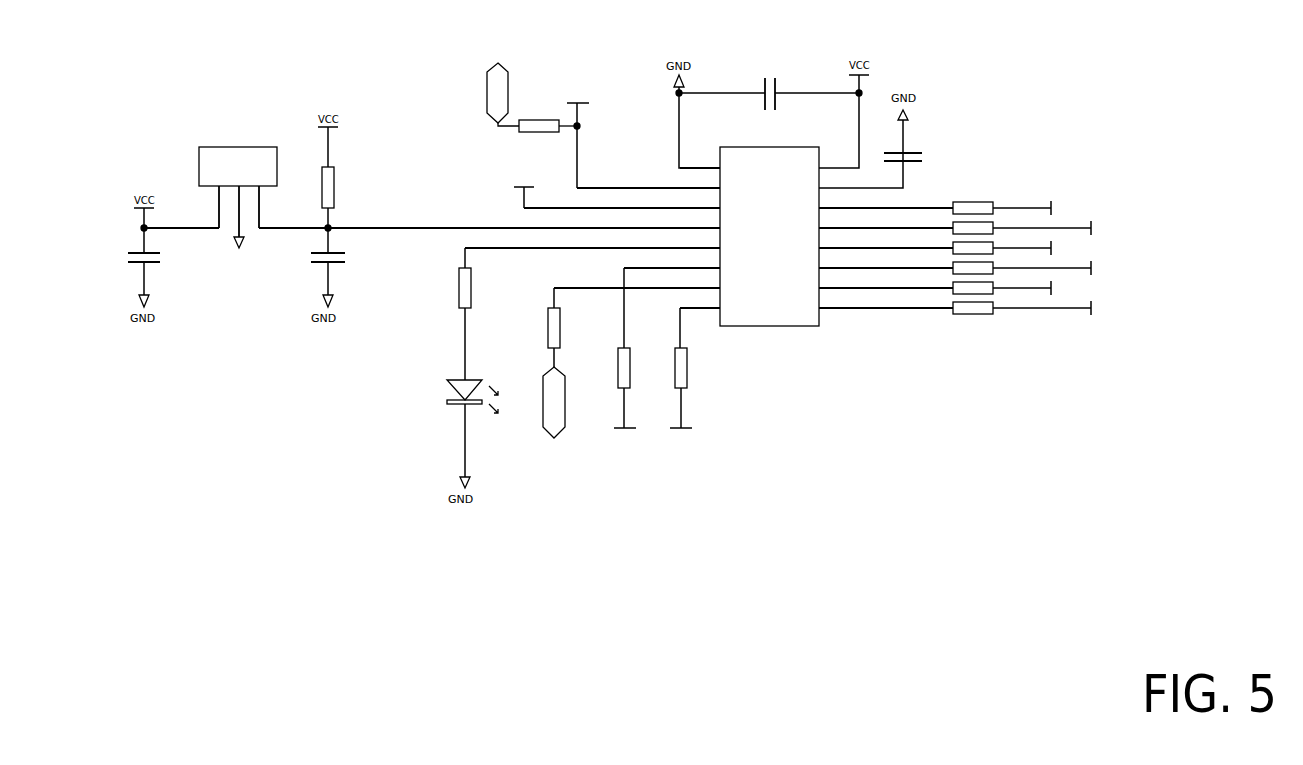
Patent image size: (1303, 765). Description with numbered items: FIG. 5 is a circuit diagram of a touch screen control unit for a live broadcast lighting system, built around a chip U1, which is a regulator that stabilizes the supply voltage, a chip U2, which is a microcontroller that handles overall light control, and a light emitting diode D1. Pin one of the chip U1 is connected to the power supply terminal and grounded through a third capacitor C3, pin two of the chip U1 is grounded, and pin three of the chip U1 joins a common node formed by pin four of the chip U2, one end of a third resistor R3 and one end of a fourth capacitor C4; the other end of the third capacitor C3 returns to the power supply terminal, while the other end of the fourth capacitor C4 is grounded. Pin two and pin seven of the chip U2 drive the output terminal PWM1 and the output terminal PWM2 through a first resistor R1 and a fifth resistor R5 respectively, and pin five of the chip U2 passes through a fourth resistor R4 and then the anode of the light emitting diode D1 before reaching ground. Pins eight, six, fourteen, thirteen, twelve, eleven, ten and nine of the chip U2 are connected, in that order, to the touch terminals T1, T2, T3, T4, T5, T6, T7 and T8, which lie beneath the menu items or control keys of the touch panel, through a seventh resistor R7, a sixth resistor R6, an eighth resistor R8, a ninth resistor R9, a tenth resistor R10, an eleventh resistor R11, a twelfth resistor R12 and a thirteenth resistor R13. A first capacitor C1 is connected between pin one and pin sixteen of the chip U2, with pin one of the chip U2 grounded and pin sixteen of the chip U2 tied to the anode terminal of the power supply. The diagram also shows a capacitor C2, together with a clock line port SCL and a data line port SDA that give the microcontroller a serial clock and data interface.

The chip U1 is at (238, 197).
The chip U2 is at (816, 246).
The first resistor R1 is at (547, 118).
The third resistor R3 is at (336, 197).
The fourth resistor R4 is at (474, 314).
The fifth resistor R5 is at (563, 327).
The sixth resistor R6 is at (633, 348).
The seventh resistor R7 is at (690, 368).
The eighth resistor R8 is at (1002, 203).
The ninth resistor R9 is at (1022, 223).
The tenth resistor R10 is at (1002, 243).
The eleventh resistor R11 is at (1022, 263).
The twelfth resistor R12 is at (1002, 283).
The thirteenth resistor R13 is at (1022, 303).
The first capacitor C1 is at (769, 86).
The capacitor C2 is at (911, 154).
The third capacitor C3 is at (154, 271).
The fourth capacitor C4 is at (317, 272).
The light emitting diode D1 is at (455, 428).
The touch terminal T1 is at (681, 438).
The touch terminal T2 is at (624, 438).
The touch terminal T3 is at (1060, 208).
The touch terminal T4 is at (1100, 228).
The touch terminal T5 is at (1060, 248).
The touch terminal T6 is at (1100, 268).
The touch terminal T7 is at (1060, 288).
The touch terminal T8 is at (1100, 308).
The PWM1 output terminal PWM1 is at (503, 94).
The PWM2 output terminal PWM2 is at (554, 402).
The SCL clock line port SCL is at (577, 138).
The SDA data line port SDA is at (522, 190).